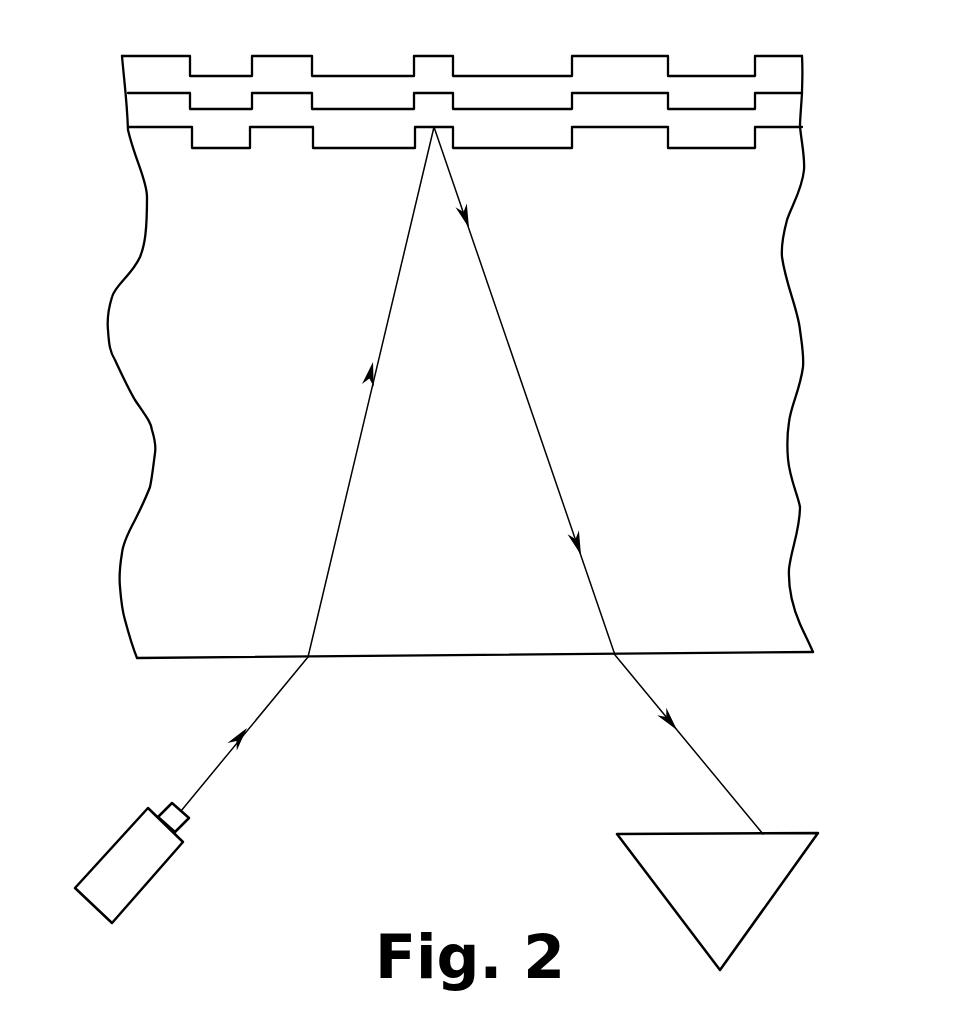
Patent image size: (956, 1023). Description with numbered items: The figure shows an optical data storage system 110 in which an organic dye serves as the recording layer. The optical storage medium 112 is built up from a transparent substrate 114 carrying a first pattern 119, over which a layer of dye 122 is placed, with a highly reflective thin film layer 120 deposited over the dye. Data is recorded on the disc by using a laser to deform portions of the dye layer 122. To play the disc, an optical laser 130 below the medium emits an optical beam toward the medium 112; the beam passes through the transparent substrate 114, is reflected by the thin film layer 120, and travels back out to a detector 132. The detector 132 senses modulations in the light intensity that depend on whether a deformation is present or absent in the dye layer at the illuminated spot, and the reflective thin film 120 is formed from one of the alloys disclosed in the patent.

The optical data storage system 110 is at (463, 712).
The optical storage medium 112 is at (112, 460).
The transparent substrate 114 is at (710, 497).
The first pattern 119 is at (218, 150).
The highly reflective thin film layer 120 is at (493, 90).
The layer of dye 122 is at (710, 135).
The optical laser 130 is at (152, 882).
The detector 132 is at (760, 915).